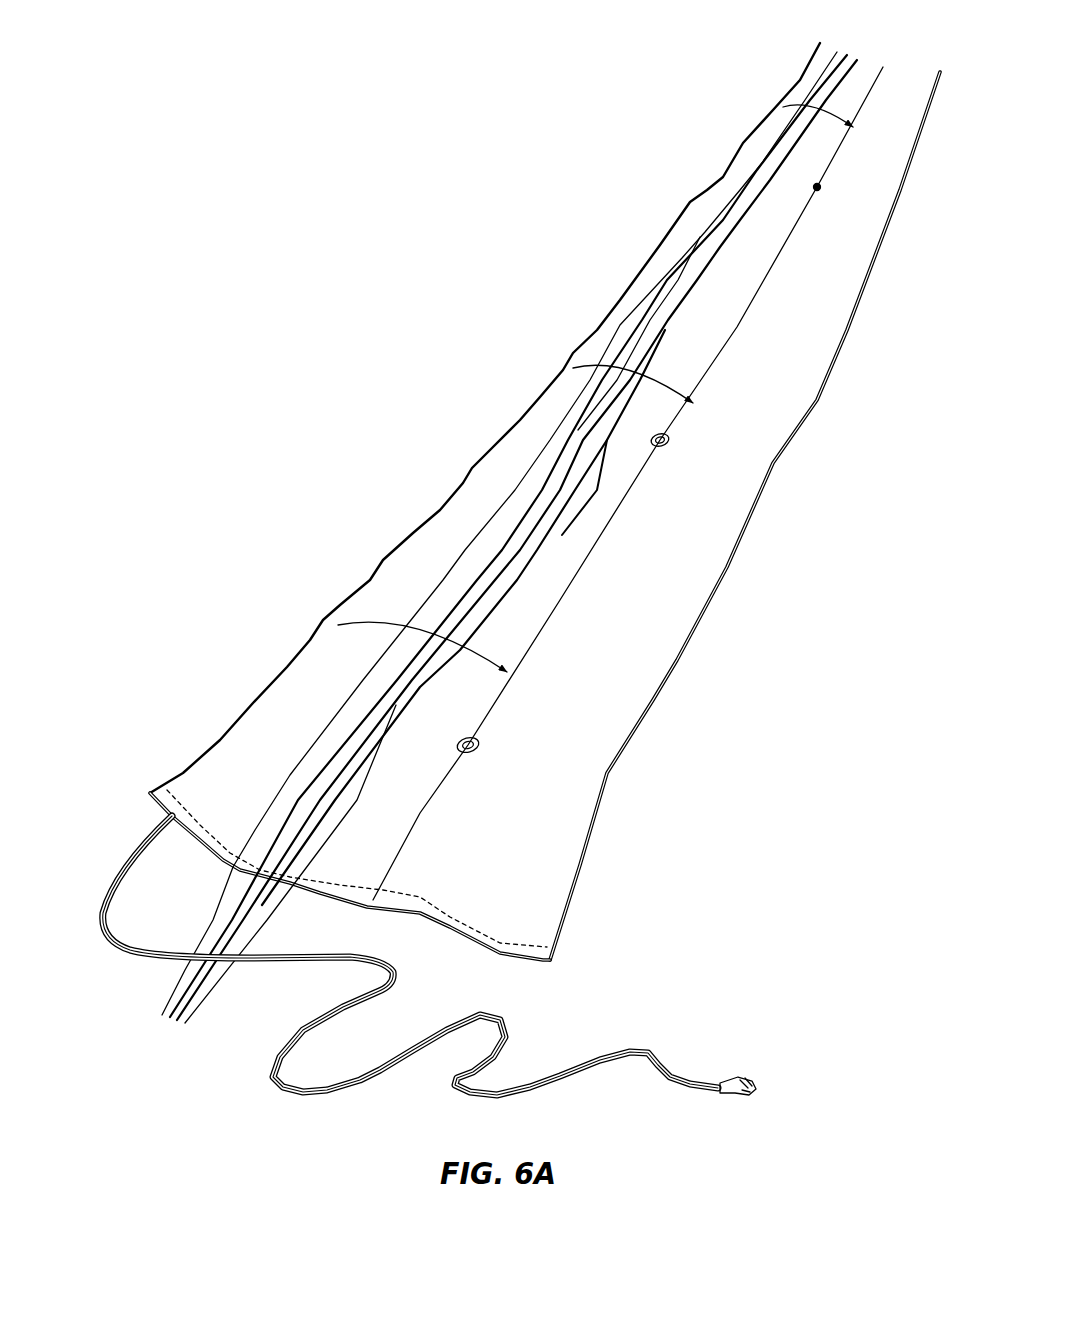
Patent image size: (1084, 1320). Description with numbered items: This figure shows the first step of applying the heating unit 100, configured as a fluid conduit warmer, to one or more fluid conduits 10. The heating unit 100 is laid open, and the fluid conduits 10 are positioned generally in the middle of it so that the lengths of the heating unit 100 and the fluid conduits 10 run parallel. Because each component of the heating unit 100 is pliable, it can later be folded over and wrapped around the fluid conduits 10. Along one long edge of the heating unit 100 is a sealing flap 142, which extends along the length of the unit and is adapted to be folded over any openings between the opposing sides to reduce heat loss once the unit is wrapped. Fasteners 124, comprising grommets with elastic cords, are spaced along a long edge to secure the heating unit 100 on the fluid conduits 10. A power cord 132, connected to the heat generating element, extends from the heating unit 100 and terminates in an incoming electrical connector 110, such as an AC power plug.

The heating unit 100 is at (383, 415).
The fasteners 124 is at (817, 187).
The sealing flap 142 is at (707, 570).
The fluid conduits 10 is at (213, 980).
The power cord 132 is at (633, 1046).
The incoming electrical connector 110 is at (727, 1097).